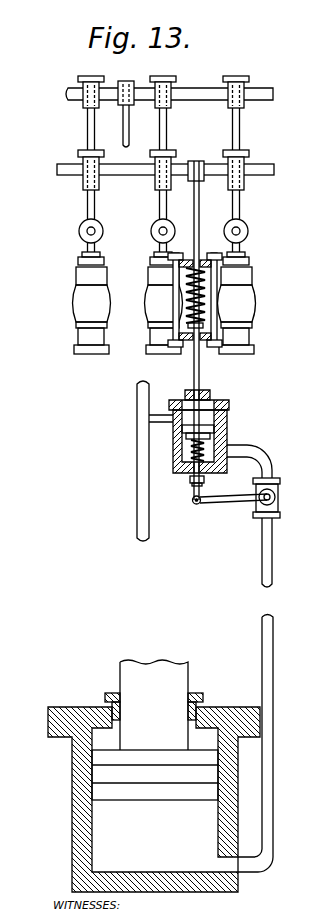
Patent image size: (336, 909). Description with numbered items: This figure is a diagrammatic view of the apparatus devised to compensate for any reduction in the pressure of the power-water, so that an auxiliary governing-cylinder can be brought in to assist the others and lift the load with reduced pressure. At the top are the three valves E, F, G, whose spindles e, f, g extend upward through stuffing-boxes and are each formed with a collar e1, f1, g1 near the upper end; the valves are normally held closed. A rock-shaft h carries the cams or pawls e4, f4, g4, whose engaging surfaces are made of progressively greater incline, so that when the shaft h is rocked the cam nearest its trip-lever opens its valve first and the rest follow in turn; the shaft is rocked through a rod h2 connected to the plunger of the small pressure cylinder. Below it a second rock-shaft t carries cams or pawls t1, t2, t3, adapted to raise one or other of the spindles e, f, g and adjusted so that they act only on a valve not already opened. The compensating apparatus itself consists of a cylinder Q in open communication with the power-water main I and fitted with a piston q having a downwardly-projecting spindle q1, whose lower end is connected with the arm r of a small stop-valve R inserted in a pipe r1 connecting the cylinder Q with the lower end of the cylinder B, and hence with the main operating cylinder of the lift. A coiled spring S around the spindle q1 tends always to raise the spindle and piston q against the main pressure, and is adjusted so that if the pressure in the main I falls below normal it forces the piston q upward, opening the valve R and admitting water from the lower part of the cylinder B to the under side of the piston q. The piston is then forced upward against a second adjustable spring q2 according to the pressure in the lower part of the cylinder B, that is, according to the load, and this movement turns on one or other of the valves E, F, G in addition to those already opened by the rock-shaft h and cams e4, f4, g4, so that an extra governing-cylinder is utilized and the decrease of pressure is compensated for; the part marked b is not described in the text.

The rock-shaft h is at (196, 94).
The second rock-shaft t is at (144, 176).
The collar e1 is at (99, 76).
The collar f1 is at (163, 77).
The collar g1 is at (250, 78).
The cam or pawl e4 is at (88, 98).
The cam or pawl f4 is at (170, 105).
The cam or pawl g4 is at (246, 104).
The rod h2 is at (129, 122).
The cam or pawl t1 is at (83, 182).
The cam or pawl t2 is at (158, 188).
The cam or pawl t3 is at (243, 183).
The valve-spindle e is at (87, 247).
The valve-spindle f is at (159, 247).
The valve-spindle g is at (244, 247).
The valve E is at (92, 303).
The valve F is at (164, 303).
The valve G is at (237, 303).
The second adjustable spring q2 is at (204, 257).
The cylinder Q is at (208, 426).
The piston q is at (225, 428).
The coiled spring S is at (190, 450).
The spindle q1 is at (190, 482).
The power-water-supply main I is at (137, 467).
The stop-valve R is at (280, 494).
The arm r is at (233, 503).
The pipe r1 is at (262, 562).
The cylinder B is at (154, 776).
The piston b is at (155, 775).